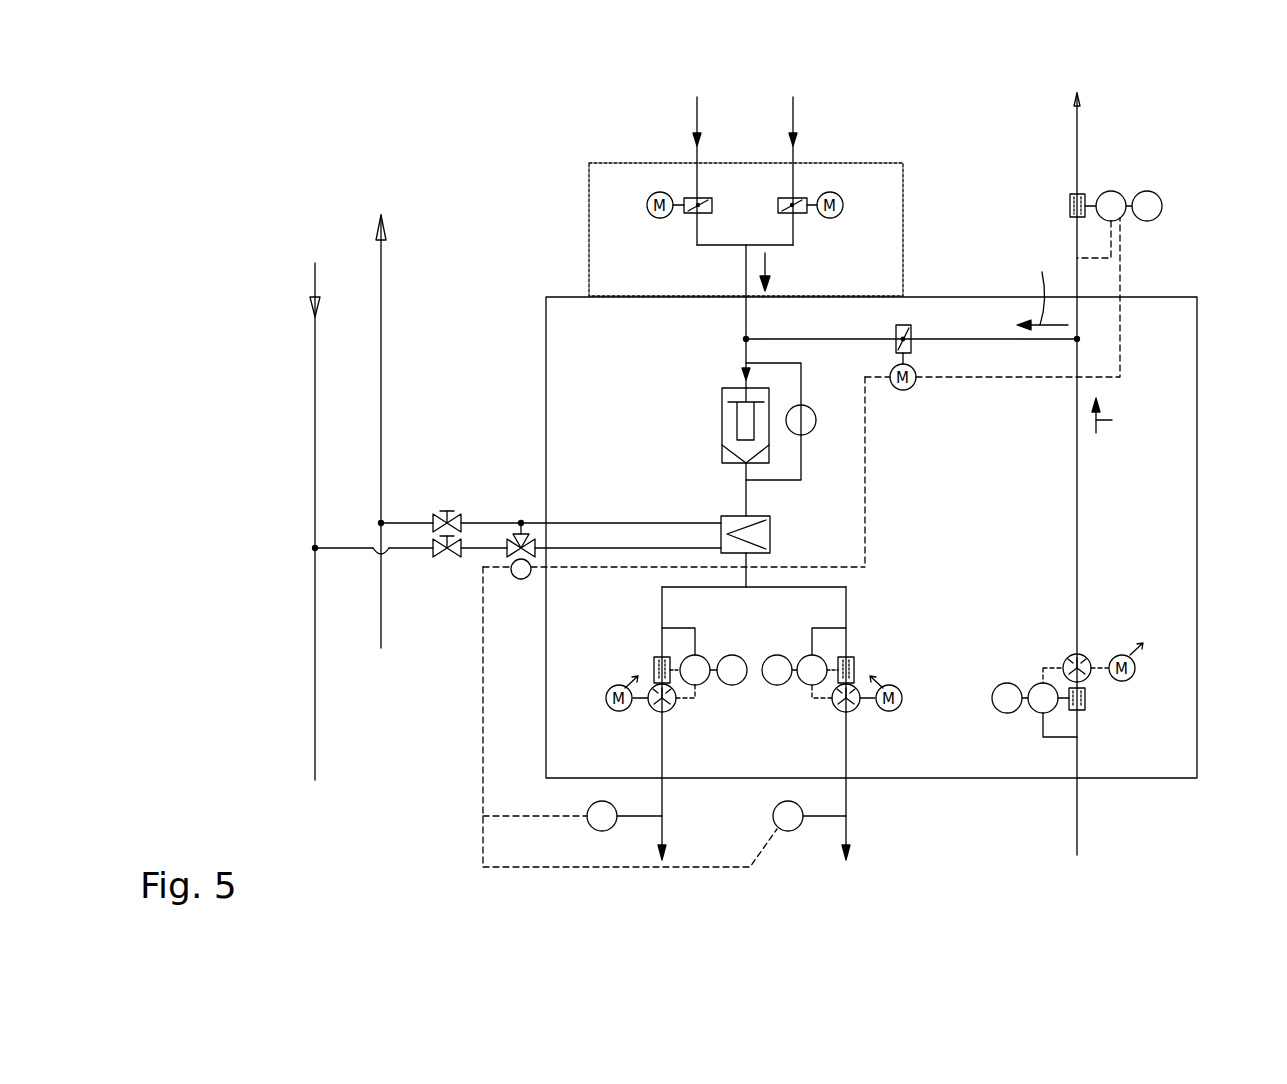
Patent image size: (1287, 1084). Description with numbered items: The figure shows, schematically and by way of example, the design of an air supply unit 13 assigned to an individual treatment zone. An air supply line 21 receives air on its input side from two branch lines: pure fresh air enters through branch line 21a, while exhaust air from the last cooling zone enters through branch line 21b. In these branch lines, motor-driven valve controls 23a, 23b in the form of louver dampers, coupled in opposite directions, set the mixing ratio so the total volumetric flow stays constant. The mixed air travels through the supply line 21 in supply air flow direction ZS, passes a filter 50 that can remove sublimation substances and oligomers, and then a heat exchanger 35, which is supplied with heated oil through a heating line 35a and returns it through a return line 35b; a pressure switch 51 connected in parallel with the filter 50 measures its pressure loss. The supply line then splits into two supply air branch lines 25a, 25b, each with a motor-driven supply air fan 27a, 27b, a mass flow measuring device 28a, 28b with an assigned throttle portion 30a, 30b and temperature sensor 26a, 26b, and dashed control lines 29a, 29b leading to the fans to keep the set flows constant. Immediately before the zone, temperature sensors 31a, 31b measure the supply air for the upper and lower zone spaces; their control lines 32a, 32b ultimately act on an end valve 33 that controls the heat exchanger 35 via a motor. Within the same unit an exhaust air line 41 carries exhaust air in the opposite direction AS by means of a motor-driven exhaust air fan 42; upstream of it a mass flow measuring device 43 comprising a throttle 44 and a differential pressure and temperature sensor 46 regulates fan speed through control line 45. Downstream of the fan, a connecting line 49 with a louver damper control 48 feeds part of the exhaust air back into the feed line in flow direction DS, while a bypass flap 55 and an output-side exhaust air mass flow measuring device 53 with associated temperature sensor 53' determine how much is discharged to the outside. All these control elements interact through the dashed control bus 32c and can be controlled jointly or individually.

The air supply unit 13 is at (1197, 512).
The air supply line 21 is at (746, 325).
The first branch line 21a is at (697, 126).
The second branch line 21b is at (793, 124).
The valve control 23a is at (693, 212).
The valve control 23b is at (808, 212).
The supply air branch line 25a is at (668, 833).
The supply air branch line 25b is at (848, 795).
The temperature sensor 26a is at (742, 657).
The temperature sensor 26b is at (782, 657).
The supply air fan 27a is at (670, 712).
The supply air fan 27b is at (853, 710).
The mass flow measuring device 28a is at (703, 655).
The mass flow measuring device 28b is at (820, 656).
The control line 29a is at (700, 703).
The control line 29b is at (810, 703).
The throttle portion 30a is at (652, 662).
The throttle portion 30b is at (856, 665).
The temperature sensor 31a is at (590, 826).
The temperature sensor 31b is at (773, 816).
The control line 32a is at (543, 815).
The control line 32b is at (483, 857).
The control bus 32c is at (865, 482).
The end valve 33 is at (515, 552).
The heat exchanger 35 is at (772, 532).
The heating line 35a is at (315, 492).
The return line 35b is at (381, 427).
The exhaust air line 41 is at (1078, 512).
The exhaust air fan 42 is at (1087, 658).
The mass flow measuring device 43 is at (1044, 714).
The throttle 44 is at (1086, 698).
The control line 45 is at (1060, 668).
The differential pressure sensor and temperature sensor 46 is at (1005, 684).
The louver damper control 48 is at (914, 332).
The connecting line 49 is at (1018, 345).
The filter 50 is at (722, 425).
The pressure switch 51 is at (812, 406).
The exhaust air mass flow measuring device 53 is at (1130, 197).
The temperature sensor 53' is at (1185, 184).
The bypass flap 55 is at (1068, 206).
The supply air flow direction ZS is at (767, 270).
The flow direction DS is at (1042, 286).
The exhaust air flow direction AS is at (1112, 420).